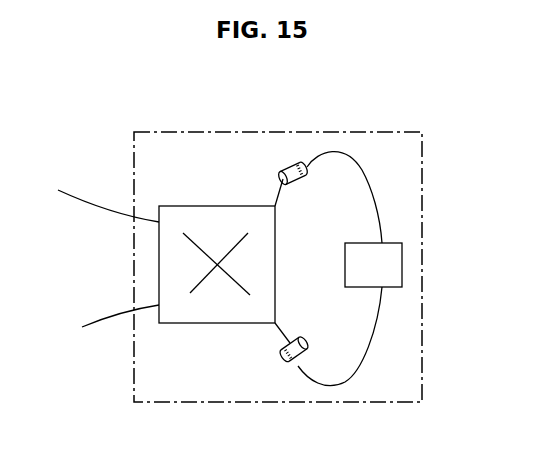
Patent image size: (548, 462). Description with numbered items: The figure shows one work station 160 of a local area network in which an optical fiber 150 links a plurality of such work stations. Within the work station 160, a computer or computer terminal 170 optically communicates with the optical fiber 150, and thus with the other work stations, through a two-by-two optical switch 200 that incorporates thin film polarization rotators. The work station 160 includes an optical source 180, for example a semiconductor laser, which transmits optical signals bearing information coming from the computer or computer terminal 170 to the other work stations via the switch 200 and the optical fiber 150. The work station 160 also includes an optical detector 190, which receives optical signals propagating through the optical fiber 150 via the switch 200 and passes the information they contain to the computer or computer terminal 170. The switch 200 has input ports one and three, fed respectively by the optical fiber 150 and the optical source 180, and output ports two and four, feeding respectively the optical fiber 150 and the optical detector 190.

The optical fiber 150 is at (99, 207).
The work station 160 is at (311, 132).
The computer or computer terminal 170 is at (363, 265).
The optical source 180 is at (283, 168).
The optical detector 190 is at (283, 367).
The 2×2 optical switch 200 is at (210, 220).